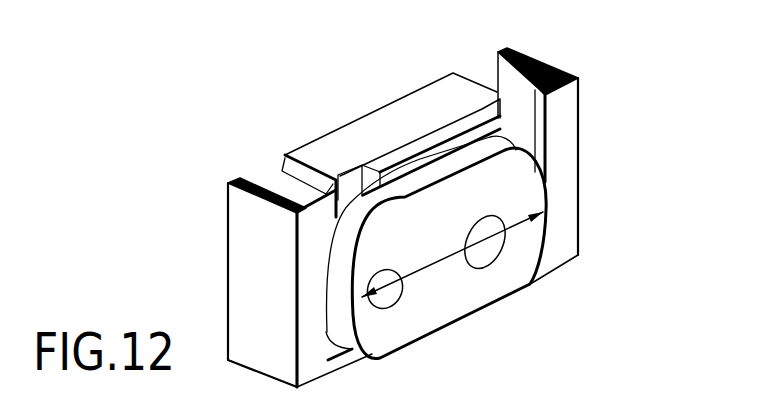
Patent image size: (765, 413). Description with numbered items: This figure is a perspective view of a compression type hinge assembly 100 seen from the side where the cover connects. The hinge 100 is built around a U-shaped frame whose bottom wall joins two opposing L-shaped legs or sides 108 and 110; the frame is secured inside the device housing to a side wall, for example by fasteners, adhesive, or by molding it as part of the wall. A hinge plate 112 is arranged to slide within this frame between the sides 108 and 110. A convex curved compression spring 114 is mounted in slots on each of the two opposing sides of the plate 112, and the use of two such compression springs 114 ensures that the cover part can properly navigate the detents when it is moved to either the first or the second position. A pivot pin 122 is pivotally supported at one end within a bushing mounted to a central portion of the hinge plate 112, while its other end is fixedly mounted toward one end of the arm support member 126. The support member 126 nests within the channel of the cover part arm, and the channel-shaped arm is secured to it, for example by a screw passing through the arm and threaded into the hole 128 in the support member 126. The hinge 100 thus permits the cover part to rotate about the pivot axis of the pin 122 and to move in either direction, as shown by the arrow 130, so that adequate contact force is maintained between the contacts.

The compression type hinge assembly 100 is at (337, 99).
The L-shaped leg or side 108 is at (238, 257).
The L-shaped leg or side 110 is at (567, 72).
The hinge plate 112 is at (453, 83).
The convex curved compression spring 114 is at (287, 185).
The pivot pin 122 is at (493, 261).
The arm support member 126 is at (538, 172).
The hole 128 is at (397, 307).
The arrow 130 is at (469, 270).